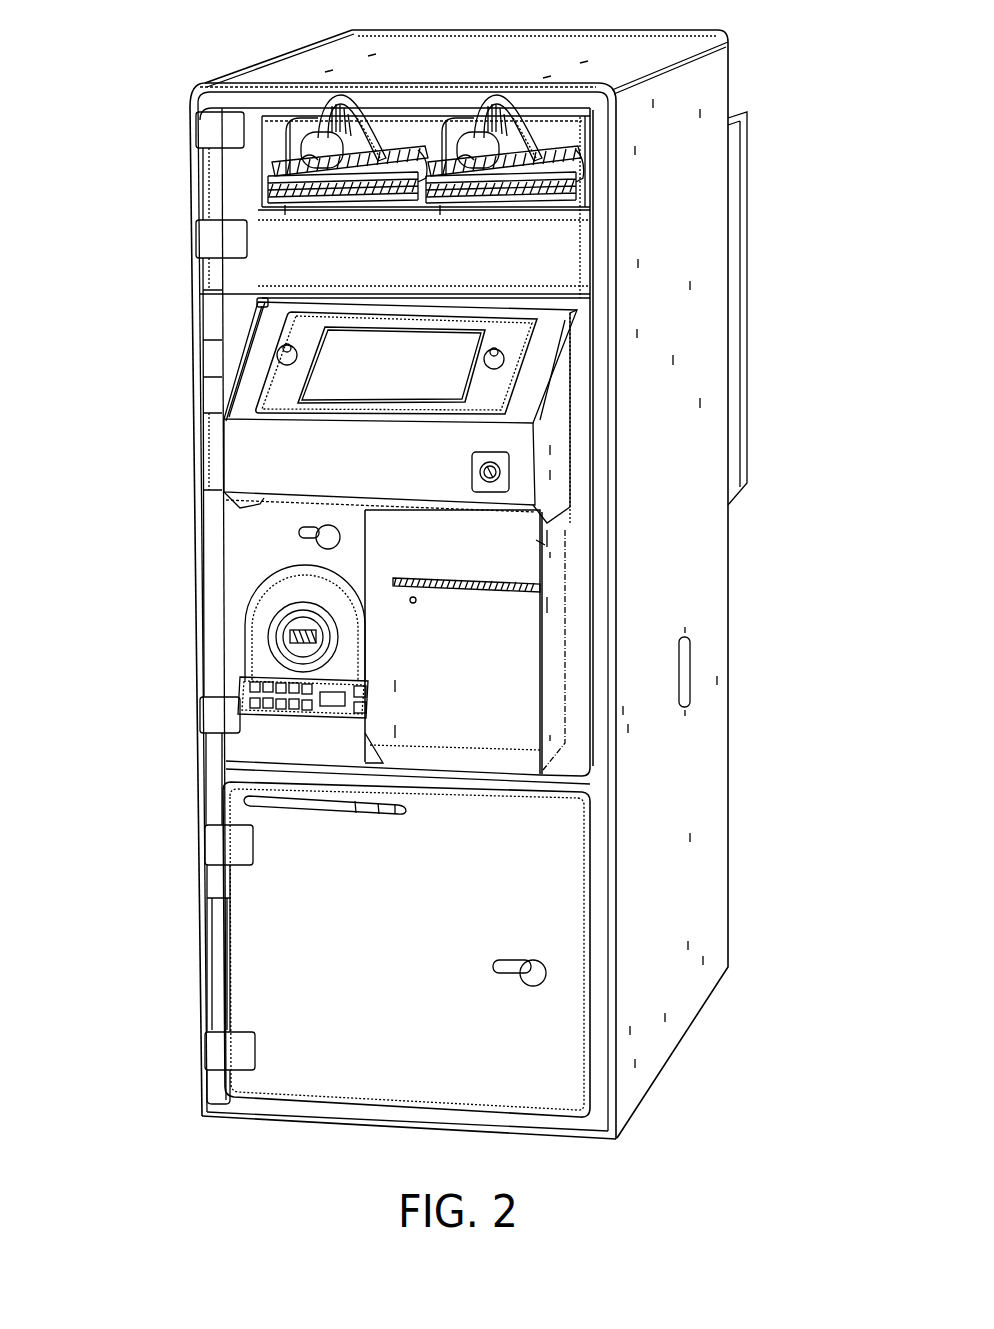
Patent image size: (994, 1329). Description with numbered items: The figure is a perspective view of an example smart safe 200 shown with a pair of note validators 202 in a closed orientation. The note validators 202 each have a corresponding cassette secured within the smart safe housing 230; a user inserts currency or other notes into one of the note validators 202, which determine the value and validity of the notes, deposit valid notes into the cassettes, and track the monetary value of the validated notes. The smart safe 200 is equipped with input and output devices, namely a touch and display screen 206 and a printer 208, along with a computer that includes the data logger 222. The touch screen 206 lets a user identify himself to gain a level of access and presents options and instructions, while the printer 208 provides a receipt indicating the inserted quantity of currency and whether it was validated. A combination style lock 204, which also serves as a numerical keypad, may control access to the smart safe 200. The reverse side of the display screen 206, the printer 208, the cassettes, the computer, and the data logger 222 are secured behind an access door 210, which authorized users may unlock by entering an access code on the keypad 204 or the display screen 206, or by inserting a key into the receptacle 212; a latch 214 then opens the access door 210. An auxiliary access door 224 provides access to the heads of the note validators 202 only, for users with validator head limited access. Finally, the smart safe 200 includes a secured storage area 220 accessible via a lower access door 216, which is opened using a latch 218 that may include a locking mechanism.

The smart safe 200 is at (151, 58).
The note validators 202 is at (285, 127).
The combination style lock 204 is at (278, 713).
The touch and display screen 206 is at (407, 380).
The printer 208 is at (395, 578).
The access door 210 is at (595, 538).
The receptacle 212 is at (505, 478).
The latch 214 is at (318, 537).
The access door 216 is at (590, 903).
The latch 218 is at (548, 975).
The secured storage area 220 is at (165, 940).
The data logger 222 is at (248, 458).
The auxiliary access door 224 is at (590, 262).
The smart safe housing 230 is at (738, 80).